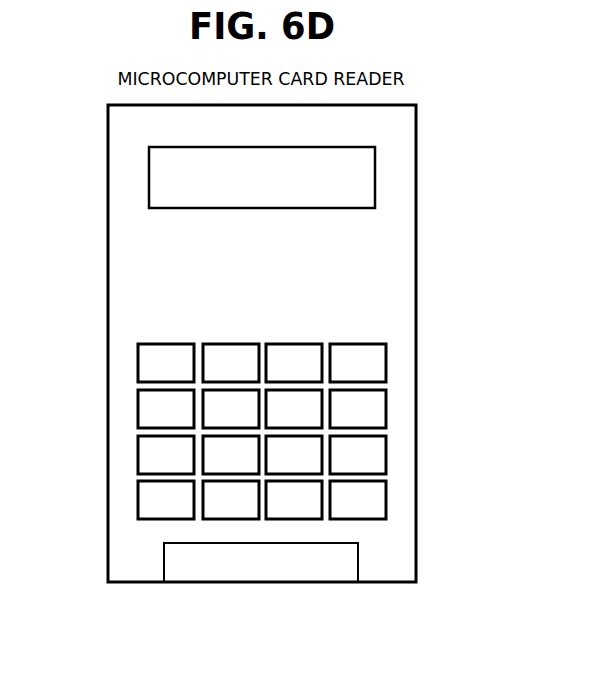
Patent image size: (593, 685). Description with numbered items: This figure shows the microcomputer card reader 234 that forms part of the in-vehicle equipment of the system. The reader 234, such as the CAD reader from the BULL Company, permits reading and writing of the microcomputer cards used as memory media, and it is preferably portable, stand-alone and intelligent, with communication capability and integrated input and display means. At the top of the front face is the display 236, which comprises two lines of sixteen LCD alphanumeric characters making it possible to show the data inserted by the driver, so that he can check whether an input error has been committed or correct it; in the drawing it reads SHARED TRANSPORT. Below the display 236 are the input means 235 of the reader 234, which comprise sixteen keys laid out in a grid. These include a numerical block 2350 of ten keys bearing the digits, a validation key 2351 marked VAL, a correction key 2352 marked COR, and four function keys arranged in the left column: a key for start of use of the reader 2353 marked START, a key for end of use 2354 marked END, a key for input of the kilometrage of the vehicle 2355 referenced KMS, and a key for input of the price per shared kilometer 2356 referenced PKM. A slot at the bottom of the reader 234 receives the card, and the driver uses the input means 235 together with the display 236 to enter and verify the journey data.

The reader 234 is at (433, 178).
The display 236 is at (247, 219).
The input means 235 is at (158, 330).
The numerical block 2350 is at (291, 328).
The validation key 2351 is at (350, 520).
The correction key 2352 is at (226, 520).
The key for start of use of the reader 2353 is at (137, 362).
The key for end of use 2354 is at (137, 404).
The key for input of the kilometrage of the vehicle 2355 is at (137, 453).
The key for input of the price per shared kilometer 2356 is at (137, 499).